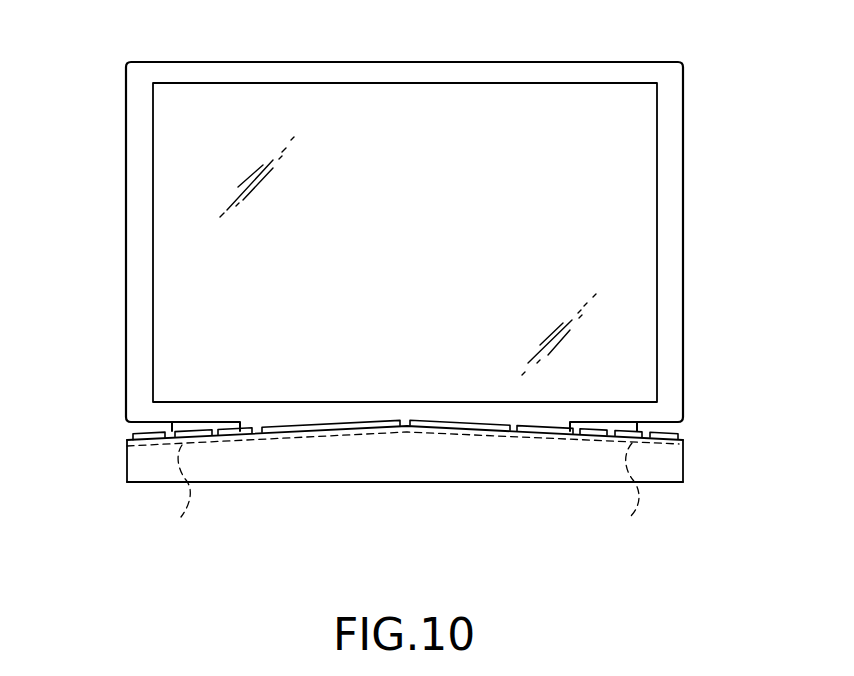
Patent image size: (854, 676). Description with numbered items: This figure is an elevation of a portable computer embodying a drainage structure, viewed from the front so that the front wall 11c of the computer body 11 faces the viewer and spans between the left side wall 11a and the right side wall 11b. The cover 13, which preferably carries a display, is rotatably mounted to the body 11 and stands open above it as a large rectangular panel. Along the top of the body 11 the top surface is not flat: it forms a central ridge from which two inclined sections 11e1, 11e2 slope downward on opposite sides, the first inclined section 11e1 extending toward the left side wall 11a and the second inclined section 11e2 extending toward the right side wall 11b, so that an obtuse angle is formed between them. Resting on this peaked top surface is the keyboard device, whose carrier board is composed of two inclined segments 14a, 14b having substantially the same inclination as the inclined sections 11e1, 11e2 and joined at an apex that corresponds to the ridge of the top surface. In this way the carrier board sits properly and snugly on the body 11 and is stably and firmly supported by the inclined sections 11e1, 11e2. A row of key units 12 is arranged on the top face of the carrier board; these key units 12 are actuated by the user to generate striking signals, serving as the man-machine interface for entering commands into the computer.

The body 11 is at (406, 502).
The left side wall 11a is at (127, 475).
The right side wall 11b is at (683, 466).
The front wall 11c is at (510, 470).
The inclined section 11e1 is at (203, 552).
The inclined section 11e2 is at (655, 555).
The key units 12 is at (138, 436).
The cover 13 is at (138, 170).
The inclined segment 14a is at (127, 440).
The inclined segment 14b is at (683, 438).